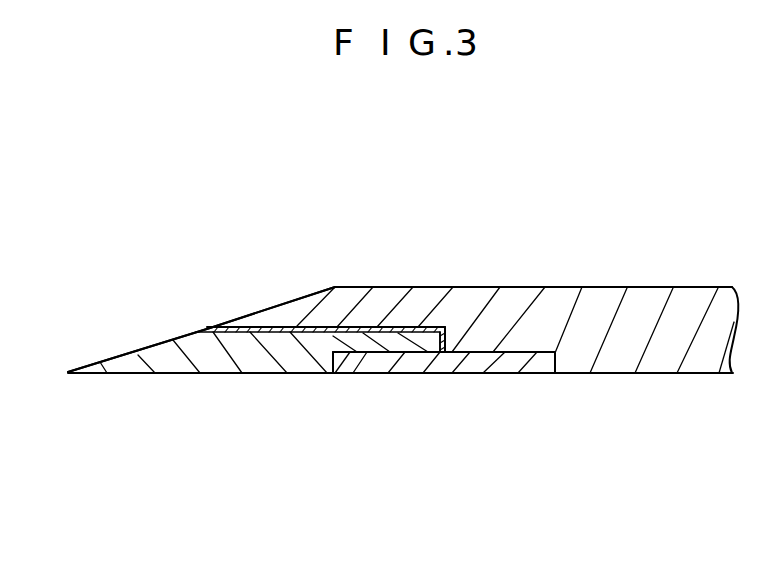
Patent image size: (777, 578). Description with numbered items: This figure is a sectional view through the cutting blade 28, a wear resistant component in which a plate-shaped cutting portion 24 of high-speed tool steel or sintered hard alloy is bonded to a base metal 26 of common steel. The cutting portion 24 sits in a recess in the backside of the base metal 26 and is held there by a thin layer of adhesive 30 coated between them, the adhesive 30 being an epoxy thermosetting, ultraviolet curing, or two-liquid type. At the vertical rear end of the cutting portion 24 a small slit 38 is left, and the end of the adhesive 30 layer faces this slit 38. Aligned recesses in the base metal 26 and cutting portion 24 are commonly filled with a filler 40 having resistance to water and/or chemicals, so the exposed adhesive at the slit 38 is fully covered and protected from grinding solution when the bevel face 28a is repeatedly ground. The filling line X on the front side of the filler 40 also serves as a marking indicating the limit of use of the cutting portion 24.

The cutting portion 24 is at (223, 355).
The base metal 26 is at (538, 303).
The cutting blade 28 is at (625, 387).
The bevel face 28a is at (263, 309).
The adhesive 30 is at (327, 326).
The slit 38 is at (445, 338).
The filler 40 is at (426, 365).
The filling line X is at (331, 374).